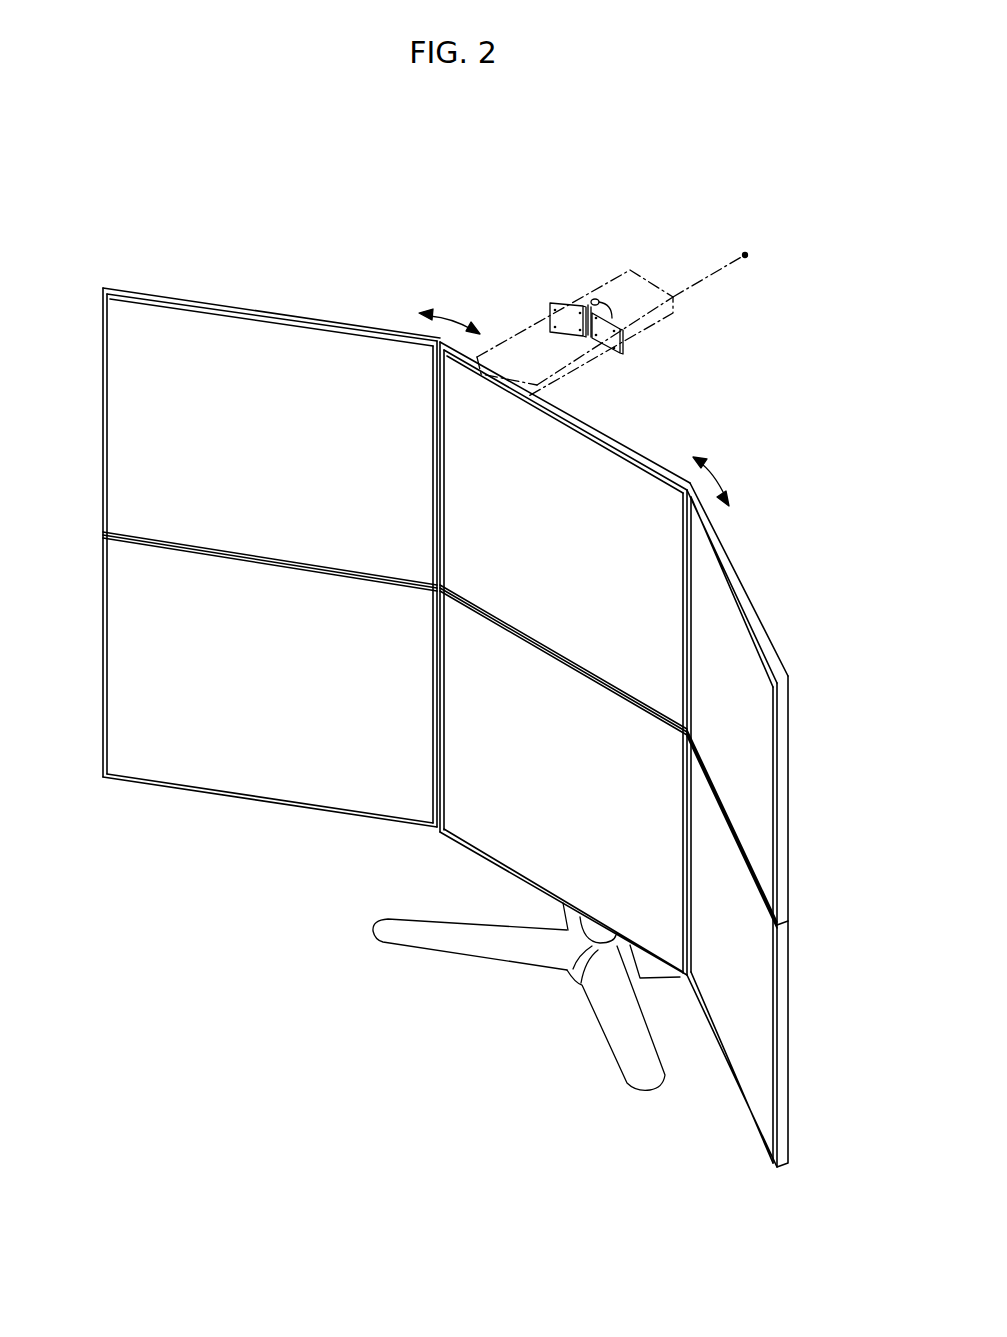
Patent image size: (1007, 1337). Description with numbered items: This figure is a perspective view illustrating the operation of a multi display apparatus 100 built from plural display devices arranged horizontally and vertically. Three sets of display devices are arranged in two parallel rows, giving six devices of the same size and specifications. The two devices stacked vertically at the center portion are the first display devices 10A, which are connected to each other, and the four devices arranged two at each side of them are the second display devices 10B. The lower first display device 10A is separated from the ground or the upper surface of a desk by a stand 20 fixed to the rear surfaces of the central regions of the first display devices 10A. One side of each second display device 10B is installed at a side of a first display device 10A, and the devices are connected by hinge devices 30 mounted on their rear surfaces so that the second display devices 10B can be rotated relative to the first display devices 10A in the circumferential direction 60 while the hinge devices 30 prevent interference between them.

The multi display apparatus 100 is at (397, 153).
The first display device 10A is at (630, 448).
The second display device 10B is at (244, 311).
The stand 20 is at (562, 975).
The hinge device 30 is at (543, 301).
The circumferential direction 60 is at (458, 316).